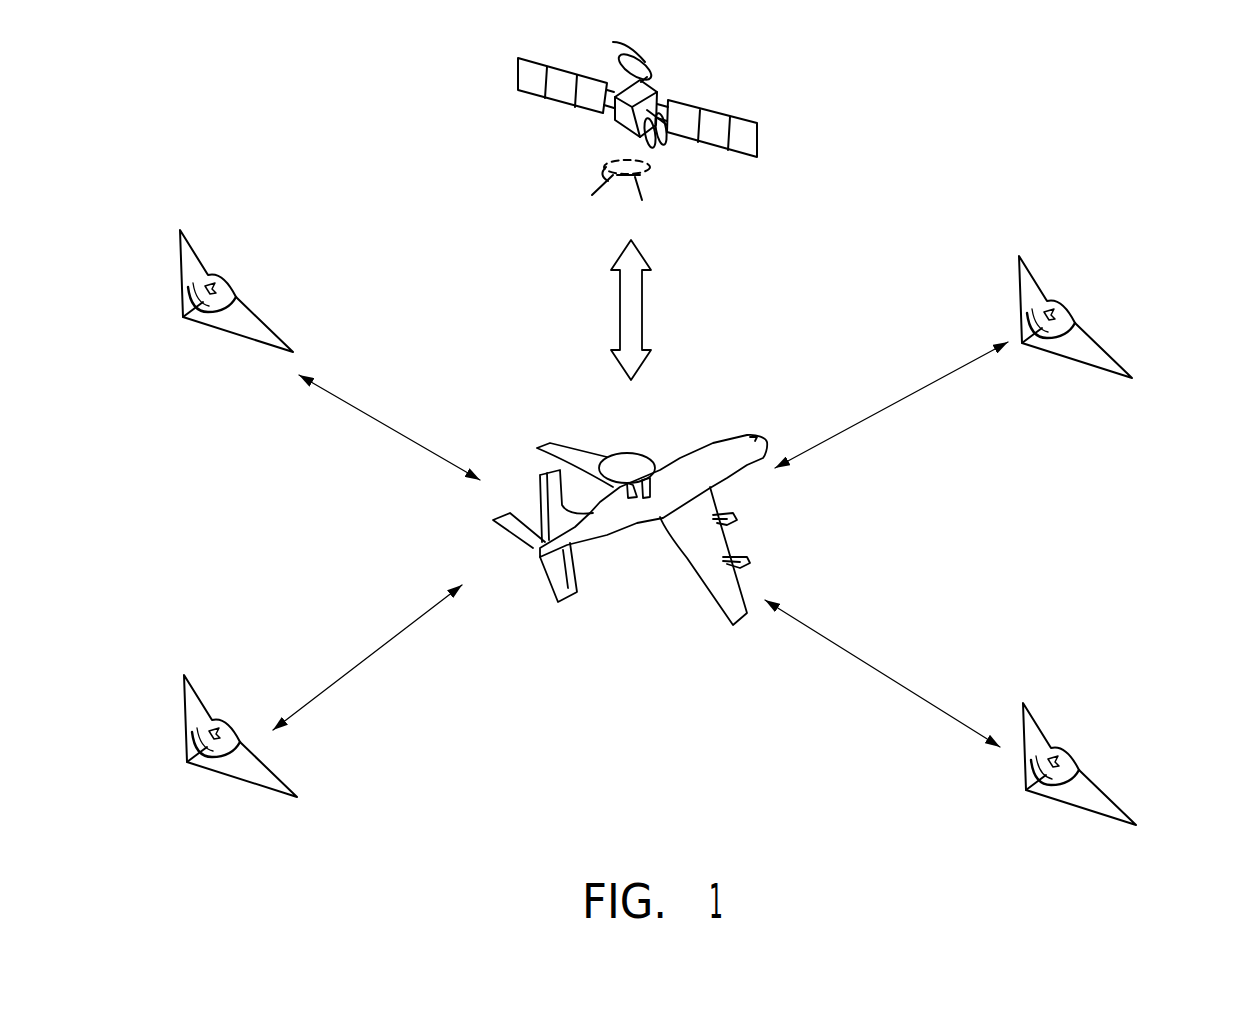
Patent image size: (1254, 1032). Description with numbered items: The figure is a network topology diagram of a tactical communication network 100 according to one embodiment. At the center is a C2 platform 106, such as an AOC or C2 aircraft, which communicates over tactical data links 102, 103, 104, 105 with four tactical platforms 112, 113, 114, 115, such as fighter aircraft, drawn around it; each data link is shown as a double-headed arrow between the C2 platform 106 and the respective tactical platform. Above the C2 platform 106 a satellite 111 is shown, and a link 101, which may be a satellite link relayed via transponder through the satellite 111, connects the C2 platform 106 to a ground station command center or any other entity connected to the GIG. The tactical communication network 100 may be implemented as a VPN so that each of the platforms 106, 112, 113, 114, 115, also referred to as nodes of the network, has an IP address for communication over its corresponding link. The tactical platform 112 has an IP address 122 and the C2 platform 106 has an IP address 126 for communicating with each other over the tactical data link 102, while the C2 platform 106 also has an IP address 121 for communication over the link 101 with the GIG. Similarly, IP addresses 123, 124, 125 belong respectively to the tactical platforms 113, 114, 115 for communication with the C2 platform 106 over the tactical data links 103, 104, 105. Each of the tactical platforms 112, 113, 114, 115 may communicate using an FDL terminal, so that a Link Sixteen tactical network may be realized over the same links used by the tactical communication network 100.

The tactical communication network 100 is at (663, 775).
The link 101 is at (643, 310).
The tactical data link 102 is at (395, 430).
The tactical data link 103 is at (378, 645).
The tactical data link 104 is at (905, 395).
The tactical data link 105 is at (858, 655).
The C2 platform 106 is at (637, 523).
The satellite 111 is at (613, 125).
The tactical platform 112 is at (228, 330).
The tactical platform 113 is at (215, 773).
The tactical platform 114 is at (1062, 357).
The tactical platform 115 is at (1068, 805).
The IP address 121 is at (685, 380).
The IP address 122 is at (253, 161).
The IP address 123 is at (258, 608).
The IP address 124 is at (1085, 190).
The IP address 125 is at (1086, 626).
The IP address 126 is at (648, 680).